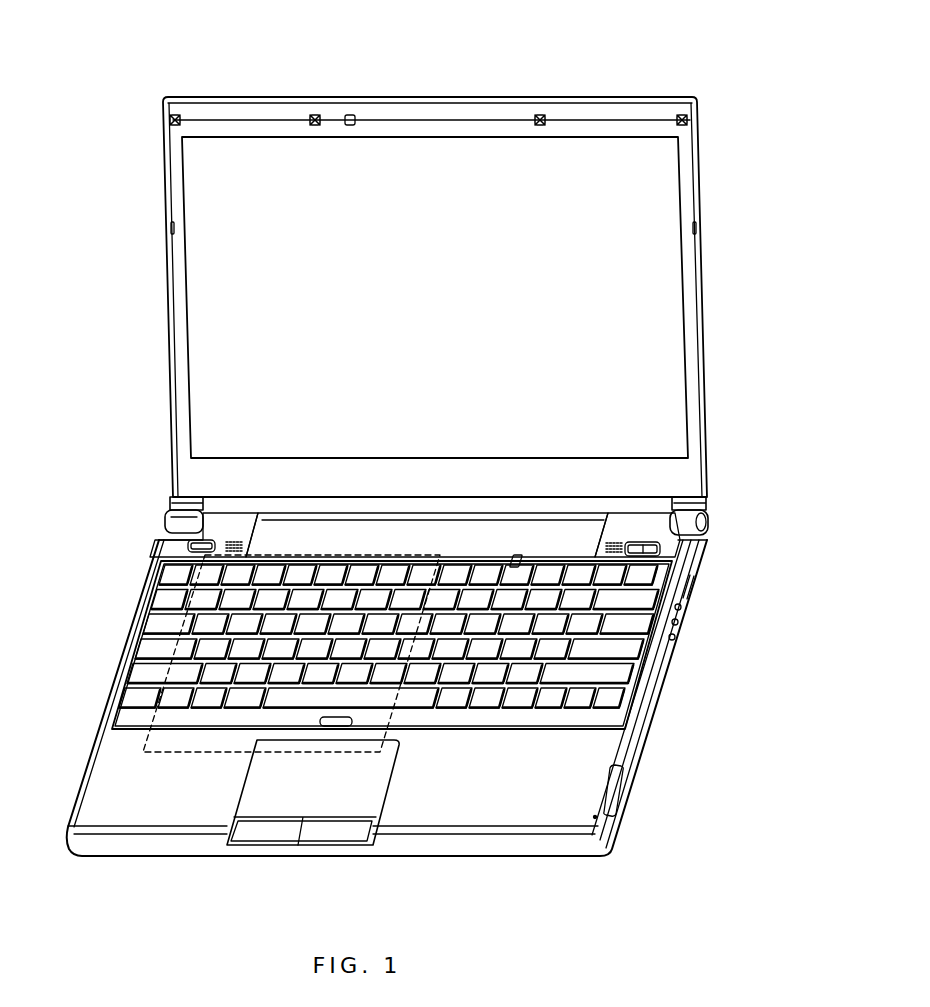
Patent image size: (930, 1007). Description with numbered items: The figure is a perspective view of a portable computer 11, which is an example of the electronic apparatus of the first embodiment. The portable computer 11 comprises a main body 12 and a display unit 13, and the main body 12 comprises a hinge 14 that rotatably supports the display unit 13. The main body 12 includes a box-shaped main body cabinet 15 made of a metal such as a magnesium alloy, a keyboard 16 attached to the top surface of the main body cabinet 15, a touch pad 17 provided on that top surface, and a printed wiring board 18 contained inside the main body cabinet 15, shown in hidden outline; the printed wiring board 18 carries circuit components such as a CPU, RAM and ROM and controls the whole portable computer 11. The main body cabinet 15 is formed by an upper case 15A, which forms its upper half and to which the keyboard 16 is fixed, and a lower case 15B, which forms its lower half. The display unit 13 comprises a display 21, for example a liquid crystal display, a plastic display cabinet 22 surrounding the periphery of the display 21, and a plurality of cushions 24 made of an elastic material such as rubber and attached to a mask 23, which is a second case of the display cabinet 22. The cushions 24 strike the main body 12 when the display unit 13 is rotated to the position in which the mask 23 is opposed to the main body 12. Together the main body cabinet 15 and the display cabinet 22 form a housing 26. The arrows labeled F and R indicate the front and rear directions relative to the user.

The portable computer 11 is at (482, 72).
The main body 12 is at (110, 588).
The display unit 13 is at (148, 256).
The hinge 14 is at (215, 523).
The main body cabinet 15 is at (645, 672).
The upper case 15A is at (632, 705).
The lower case 15B is at (640, 750).
The keyboard 16 is at (637, 628).
The touch pad 17 is at (341, 808).
The printed wiring board 18 is at (135, 672).
The display 21 is at (676, 298).
The display cabinet 22 is at (707, 180).
The mask 23 is at (608, 112).
The cushions 24 is at (176, 113).
The housing 26 is at (733, 498).